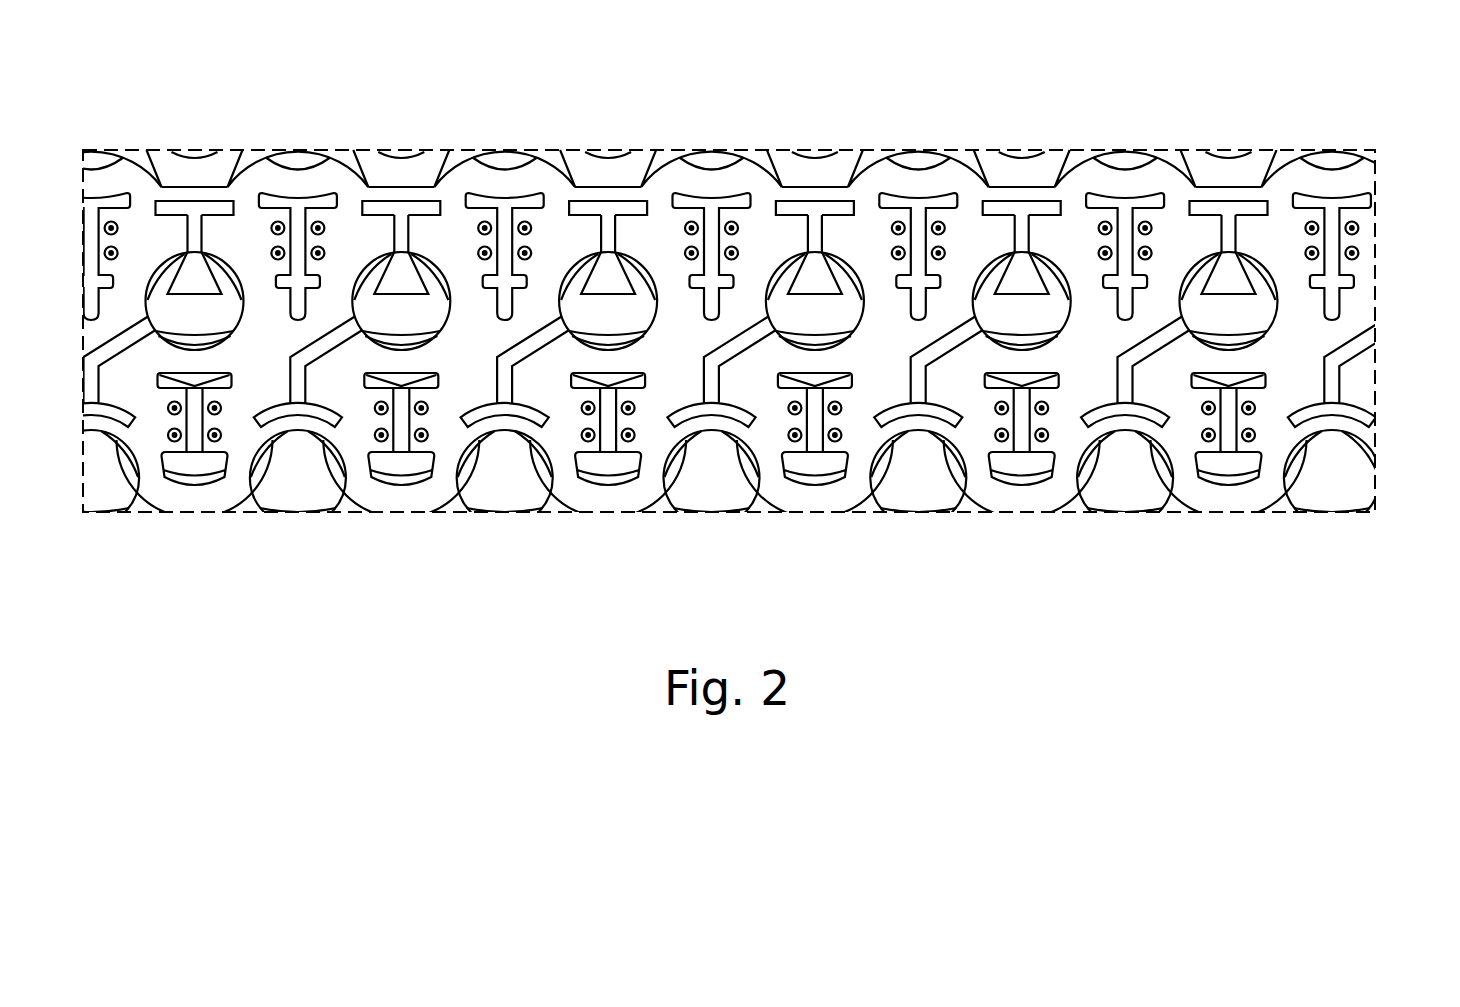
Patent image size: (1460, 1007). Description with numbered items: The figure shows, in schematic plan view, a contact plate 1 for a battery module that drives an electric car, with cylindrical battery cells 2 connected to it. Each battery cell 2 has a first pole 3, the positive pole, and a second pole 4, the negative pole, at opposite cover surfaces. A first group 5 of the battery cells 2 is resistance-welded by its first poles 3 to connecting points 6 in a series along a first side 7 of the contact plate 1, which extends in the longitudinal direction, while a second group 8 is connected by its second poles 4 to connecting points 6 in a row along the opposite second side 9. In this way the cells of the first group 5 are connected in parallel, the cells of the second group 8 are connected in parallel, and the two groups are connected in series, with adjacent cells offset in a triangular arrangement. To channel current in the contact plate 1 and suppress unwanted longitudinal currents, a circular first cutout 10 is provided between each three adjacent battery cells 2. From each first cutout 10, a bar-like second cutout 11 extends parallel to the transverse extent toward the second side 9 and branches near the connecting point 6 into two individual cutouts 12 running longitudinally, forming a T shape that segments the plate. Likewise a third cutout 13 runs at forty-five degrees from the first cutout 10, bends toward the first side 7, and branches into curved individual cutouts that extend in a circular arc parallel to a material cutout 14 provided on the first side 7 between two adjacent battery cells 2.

The contact plate 1 is at (1309, 112).
The battery cells 2 is at (362, 278).
The first pole 3 is at (815, 466).
The second pole 4 is at (435, 273).
The first group 5 is at (1386, 347).
The connecting points 6 is at (1124, 226).
The first side 7 is at (1332, 478).
The second group 8 is at (1386, 152).
The second side 9 is at (1229, 301).
The circular first cutout 10 is at (768, 282).
The second bar-like cutout 11 is at (600, 237).
The individual cutouts 12 is at (497, 418).
The third cutout 13 is at (630, 200).
The material cutout 14 is at (918, 480).